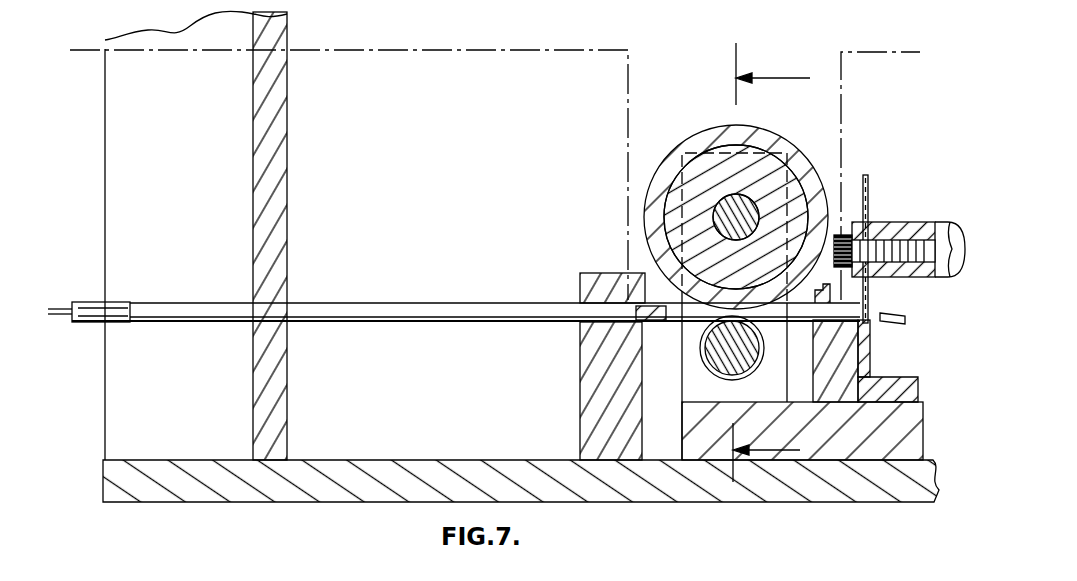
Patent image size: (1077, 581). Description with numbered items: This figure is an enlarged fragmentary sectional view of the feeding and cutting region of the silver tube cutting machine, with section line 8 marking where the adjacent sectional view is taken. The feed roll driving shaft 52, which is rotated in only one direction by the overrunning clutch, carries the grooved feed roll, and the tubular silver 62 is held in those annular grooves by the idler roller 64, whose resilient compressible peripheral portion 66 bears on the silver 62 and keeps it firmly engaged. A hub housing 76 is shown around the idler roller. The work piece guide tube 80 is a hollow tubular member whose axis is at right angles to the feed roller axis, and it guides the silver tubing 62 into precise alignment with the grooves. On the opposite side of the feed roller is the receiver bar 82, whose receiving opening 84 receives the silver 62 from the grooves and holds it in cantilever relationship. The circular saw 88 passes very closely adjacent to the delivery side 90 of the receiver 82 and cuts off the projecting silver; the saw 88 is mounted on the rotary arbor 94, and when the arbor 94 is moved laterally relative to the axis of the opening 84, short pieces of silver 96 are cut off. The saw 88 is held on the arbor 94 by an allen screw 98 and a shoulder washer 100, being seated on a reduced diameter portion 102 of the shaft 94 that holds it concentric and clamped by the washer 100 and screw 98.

The section line 8- 8 is at (92, 2).
The feed roll driving shaft 52 is at (735, 340).
The tubular silver 62 is at (688, 328).
The idler roller 64 is at (697, 136).
The resilient compressible peripheral portion 66 is at (652, 178).
The hub housing 76 is at (790, 158).
The work piece guide tube 80 is at (487, 306).
The receiver bar 82 is at (836, 340).
The receiving opening 84 is at (862, 325).
The circular saw 88 is at (868, 192).
The delivery side 90 is at (870, 354).
The rotary arbor 94 is at (912, 228).
The short pieces of silver 96 is at (907, 319).
The allen screw 98 is at (880, 222).
The shoulder washer 100 is at (851, 210).
The reduced diameter portion 102 is at (870, 270).